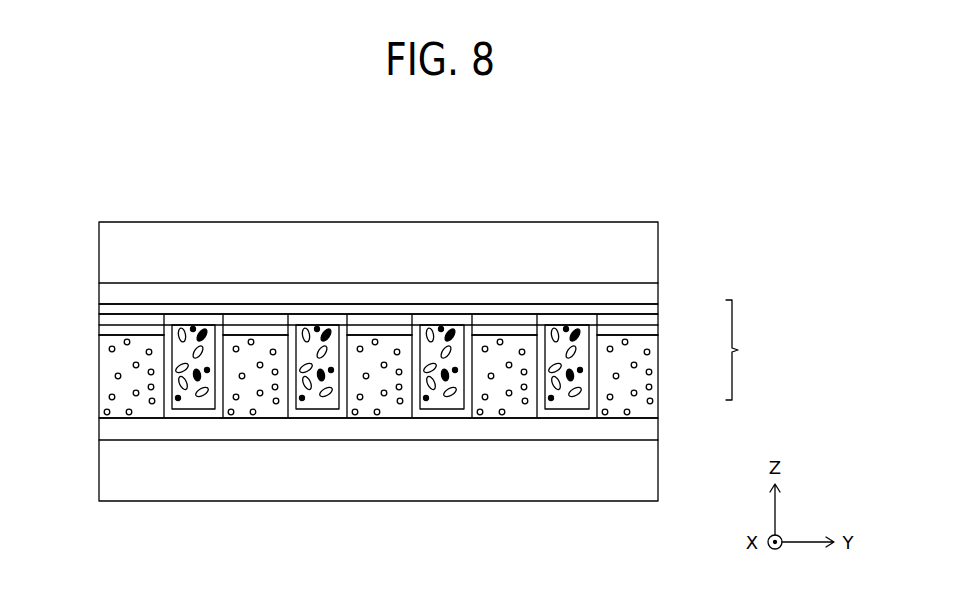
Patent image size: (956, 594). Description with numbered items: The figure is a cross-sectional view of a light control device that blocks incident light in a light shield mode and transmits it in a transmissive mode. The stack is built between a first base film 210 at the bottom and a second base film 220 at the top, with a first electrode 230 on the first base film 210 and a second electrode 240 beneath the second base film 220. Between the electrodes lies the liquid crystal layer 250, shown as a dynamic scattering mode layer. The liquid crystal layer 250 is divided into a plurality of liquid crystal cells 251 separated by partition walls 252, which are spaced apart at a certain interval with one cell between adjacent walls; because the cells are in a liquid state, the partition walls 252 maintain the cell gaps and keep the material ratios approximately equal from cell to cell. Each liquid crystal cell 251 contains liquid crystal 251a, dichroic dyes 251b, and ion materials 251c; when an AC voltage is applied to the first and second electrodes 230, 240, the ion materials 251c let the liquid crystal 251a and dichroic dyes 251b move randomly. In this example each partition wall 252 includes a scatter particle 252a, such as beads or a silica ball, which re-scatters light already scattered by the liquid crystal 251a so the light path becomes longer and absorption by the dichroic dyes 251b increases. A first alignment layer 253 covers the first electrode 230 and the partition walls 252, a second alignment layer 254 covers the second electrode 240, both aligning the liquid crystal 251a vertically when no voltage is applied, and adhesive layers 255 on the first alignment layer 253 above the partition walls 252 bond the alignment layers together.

The first base film 210 is at (650, 470).
The second base film 220 is at (648, 246).
The first electrode 230 is at (650, 432).
The second electrode 240 is at (650, 293).
The liquid crystal layer 250 is at (750, 350).
The liquid crystal cells 251 is at (585, 345).
The liquid crystal 251a is at (180, 366).
The dichroic dyes 251b is at (194, 375).
The ion materials 251c is at (176, 398).
The partition walls 252 is at (648, 392).
The scatter particle 252a is at (110, 348).
The first alignment layer 253 is at (650, 330).
The second alignment layer 254 is at (650, 309).
The adhesive layers 255 is at (648, 319).